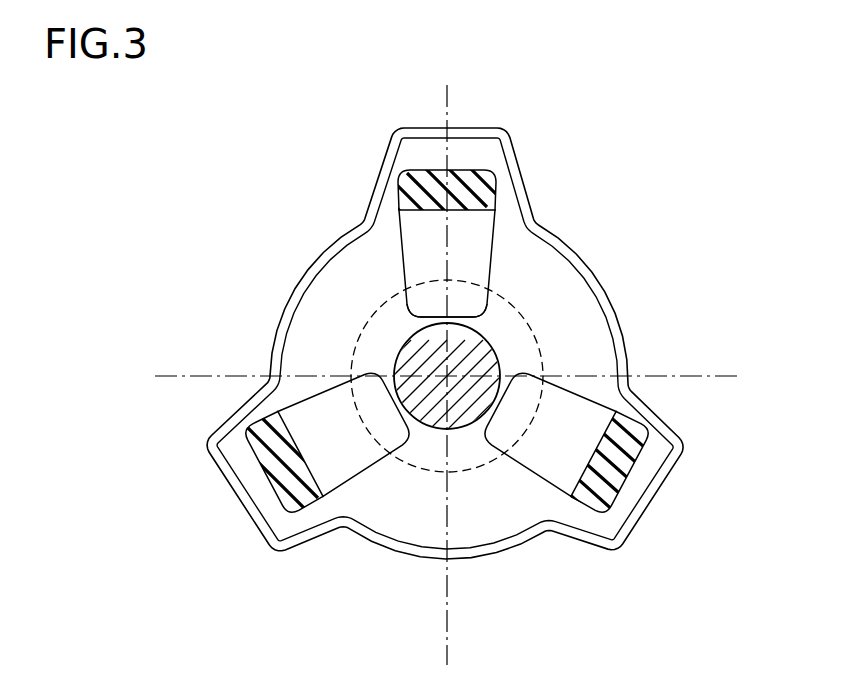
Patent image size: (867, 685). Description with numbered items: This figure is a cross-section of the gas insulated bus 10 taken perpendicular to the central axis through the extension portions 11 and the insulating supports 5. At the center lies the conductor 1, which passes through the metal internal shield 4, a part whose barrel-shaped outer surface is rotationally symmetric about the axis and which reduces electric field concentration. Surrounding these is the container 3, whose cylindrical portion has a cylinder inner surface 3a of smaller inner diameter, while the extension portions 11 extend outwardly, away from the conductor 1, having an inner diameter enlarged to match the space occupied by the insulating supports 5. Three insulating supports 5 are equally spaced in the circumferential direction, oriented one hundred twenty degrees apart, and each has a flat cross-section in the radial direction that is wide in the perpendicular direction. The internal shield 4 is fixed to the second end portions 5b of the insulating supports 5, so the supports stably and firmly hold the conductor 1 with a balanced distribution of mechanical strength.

The gas insulated bus 10 is at (590, 84).
The conductor 1 is at (432, 410).
The container 3 is at (333, 236).
The cylinder inner surface 3a is at (288, 331).
The internal shield 4 is at (472, 455).
The insulating supports 5 is at (478, 260).
The second end portions 5b is at (483, 313).
The extension portions 11 is at (408, 127).